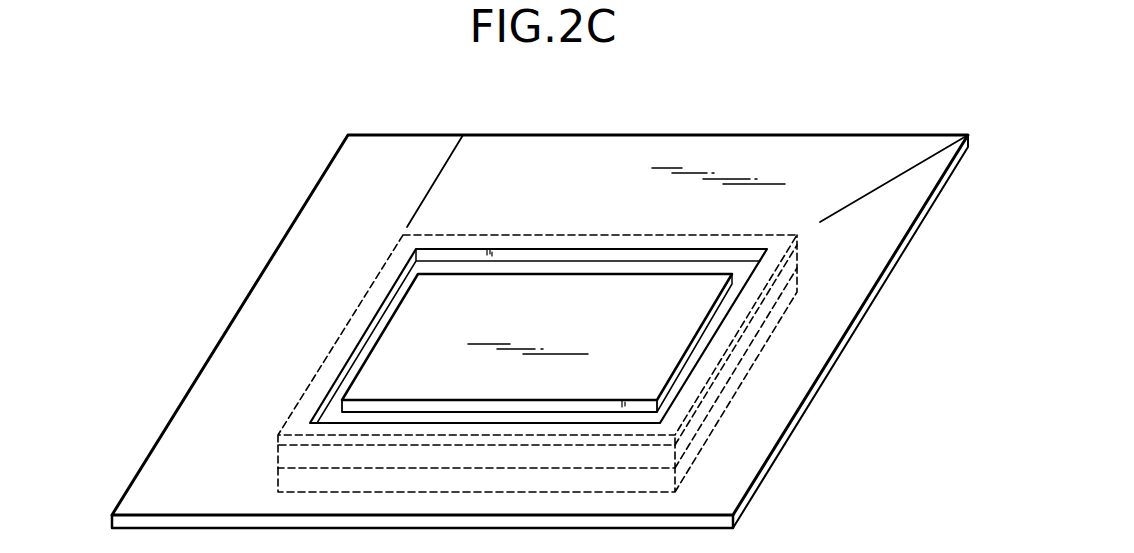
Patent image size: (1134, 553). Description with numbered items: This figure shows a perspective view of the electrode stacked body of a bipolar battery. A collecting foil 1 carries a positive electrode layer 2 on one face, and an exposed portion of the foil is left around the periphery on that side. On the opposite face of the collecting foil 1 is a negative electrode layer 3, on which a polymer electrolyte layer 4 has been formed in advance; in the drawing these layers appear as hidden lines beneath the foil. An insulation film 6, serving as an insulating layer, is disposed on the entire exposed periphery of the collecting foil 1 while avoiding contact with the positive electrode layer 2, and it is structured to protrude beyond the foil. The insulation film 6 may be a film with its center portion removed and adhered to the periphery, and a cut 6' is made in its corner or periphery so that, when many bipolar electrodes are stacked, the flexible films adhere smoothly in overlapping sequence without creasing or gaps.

The collecting foil 1 is at (275, 440).
The positive electrode layer 2 is at (571, 288).
The negative electrode layer 3 is at (275, 460).
The polymer electrolyte layer 4 is at (275, 483).
The insulation film 6 is at (540, 302).
The cut 6' is at (687, 152).